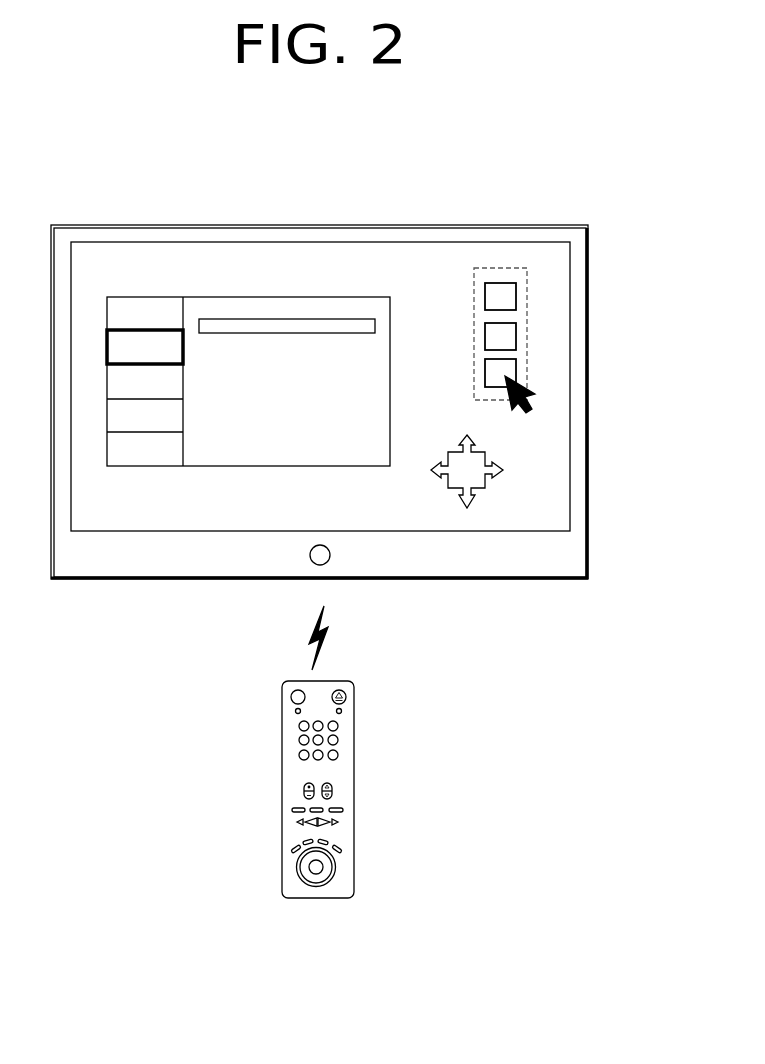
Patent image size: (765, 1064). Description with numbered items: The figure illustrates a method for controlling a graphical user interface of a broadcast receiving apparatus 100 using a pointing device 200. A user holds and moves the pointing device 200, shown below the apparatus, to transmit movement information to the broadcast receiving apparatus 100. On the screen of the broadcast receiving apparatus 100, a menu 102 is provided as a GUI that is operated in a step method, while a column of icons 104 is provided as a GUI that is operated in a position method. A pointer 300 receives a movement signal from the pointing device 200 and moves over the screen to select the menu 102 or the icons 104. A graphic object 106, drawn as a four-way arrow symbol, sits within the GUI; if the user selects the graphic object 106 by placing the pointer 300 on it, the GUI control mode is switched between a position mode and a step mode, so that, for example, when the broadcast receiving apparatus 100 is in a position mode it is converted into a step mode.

The broadcast receiving apparatus 100 is at (435, 225).
The menu 102 is at (253, 297).
The icons 104 is at (500, 268).
The graphic object 106 is at (478, 460).
The pointing device 200 is at (350, 753).
The pointer 300 is at (527, 387).